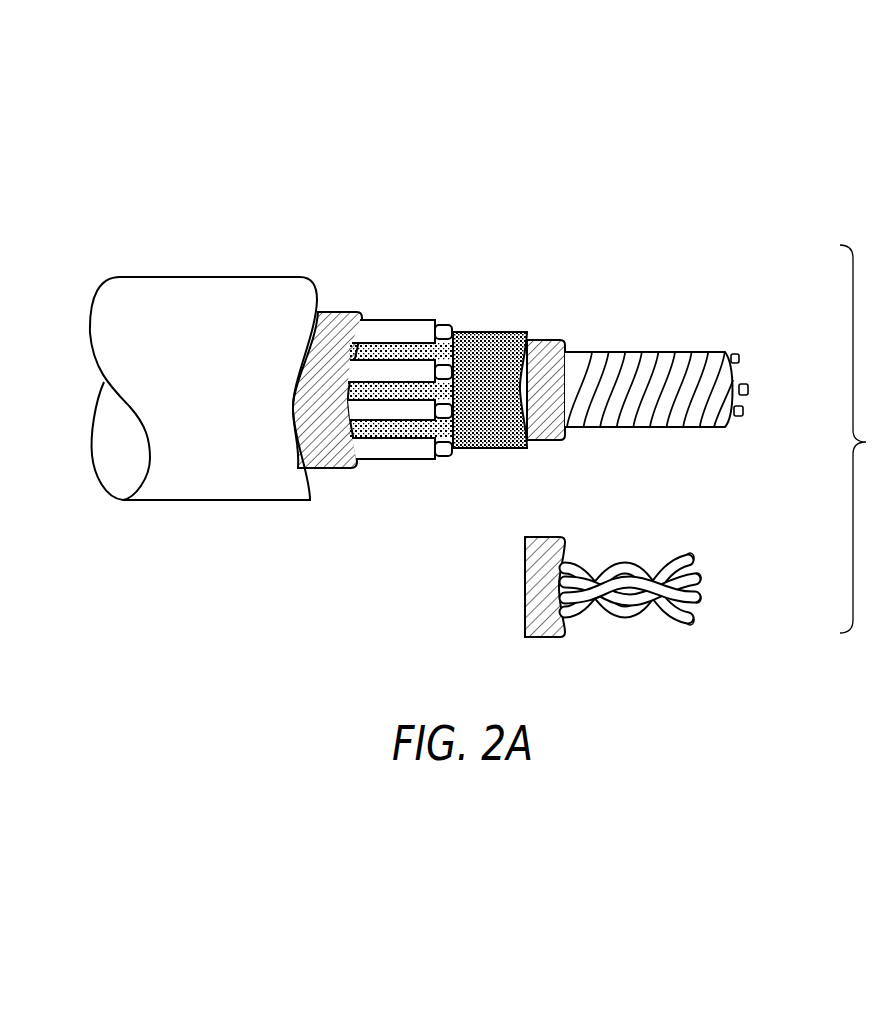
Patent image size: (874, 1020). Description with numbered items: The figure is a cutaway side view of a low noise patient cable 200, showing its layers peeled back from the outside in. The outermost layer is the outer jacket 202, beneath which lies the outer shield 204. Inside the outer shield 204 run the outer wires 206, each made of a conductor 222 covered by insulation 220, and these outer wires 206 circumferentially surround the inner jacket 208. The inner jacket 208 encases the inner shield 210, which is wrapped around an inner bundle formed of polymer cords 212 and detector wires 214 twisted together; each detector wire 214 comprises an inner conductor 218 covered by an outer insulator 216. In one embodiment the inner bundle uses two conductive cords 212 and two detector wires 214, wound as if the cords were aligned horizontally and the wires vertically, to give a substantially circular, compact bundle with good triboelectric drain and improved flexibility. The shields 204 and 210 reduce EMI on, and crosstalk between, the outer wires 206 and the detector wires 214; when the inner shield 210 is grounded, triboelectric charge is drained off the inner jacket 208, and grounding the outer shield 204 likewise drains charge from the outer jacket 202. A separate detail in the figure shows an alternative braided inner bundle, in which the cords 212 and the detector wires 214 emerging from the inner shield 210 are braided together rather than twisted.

The low noise patient cable 200 is at (670, 196).
The outer jacket 202 is at (204, 276).
The outer shield 204 is at (340, 300).
The outer wires 206 is at (416, 425).
The inner jacket 208 is at (478, 331).
The inner shield 210 is at (548, 339).
The polymer cords 212 is at (745, 412).
The detector wires 214 is at (695, 410).
The outer insulator 216 is at (722, 358).
The inner conductor 218 is at (740, 362).
The insulation 220 is at (387, 326).
The conductors 222 is at (443, 328).